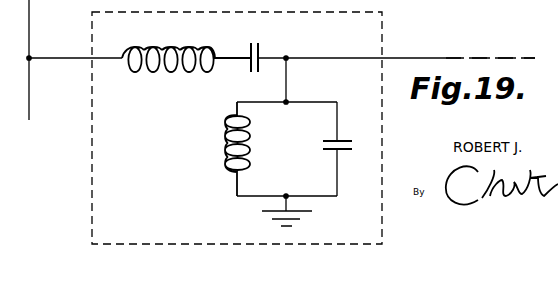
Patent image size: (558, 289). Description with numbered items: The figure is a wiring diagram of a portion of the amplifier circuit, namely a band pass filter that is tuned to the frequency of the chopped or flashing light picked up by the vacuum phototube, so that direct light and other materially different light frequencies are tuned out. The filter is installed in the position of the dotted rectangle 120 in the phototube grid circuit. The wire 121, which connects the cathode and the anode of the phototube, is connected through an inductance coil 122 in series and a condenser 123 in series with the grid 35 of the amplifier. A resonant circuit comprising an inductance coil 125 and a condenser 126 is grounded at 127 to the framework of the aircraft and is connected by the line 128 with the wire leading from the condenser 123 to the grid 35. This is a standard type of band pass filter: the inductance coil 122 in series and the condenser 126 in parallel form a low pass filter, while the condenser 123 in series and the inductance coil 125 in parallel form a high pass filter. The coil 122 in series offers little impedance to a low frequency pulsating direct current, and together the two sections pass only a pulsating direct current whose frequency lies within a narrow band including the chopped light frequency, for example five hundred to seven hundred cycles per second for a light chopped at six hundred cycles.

The grid 35 is at (487, 57).
The dotted rectangle 120 is at (92, 150).
The wire 121 is at (31, 28).
The inductance coil 122 is at (165, 47).
The condenser 123 is at (258, 36).
The inductance coil 125 is at (225, 141).
The condenser 126 is at (342, 141).
The ground 127 is at (262, 211).
The line 128 is at (287, 78).